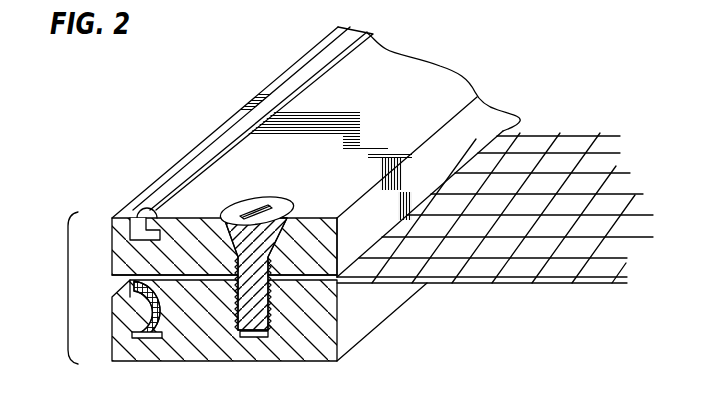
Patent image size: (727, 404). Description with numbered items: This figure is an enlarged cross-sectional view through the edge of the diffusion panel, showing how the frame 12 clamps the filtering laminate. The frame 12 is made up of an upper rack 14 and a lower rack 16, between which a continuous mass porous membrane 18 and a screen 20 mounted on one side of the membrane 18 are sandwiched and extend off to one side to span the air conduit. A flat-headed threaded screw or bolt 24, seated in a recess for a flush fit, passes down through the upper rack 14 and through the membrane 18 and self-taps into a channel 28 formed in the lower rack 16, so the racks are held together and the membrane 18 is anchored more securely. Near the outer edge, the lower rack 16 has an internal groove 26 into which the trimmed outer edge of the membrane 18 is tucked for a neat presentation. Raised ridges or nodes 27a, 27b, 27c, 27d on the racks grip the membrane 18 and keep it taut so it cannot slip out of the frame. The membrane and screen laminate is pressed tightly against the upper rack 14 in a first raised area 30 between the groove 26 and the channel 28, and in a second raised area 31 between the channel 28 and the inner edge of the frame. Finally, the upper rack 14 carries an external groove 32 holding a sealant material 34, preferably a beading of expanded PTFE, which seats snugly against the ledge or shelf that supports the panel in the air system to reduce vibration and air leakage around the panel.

The frame 12 is at (68, 292).
The upper rack 14 is at (112, 232).
The lower rack 16 is at (123, 350).
The continuous mass porous membrane 18 is at (509, 267).
The screen 20 is at (463, 267).
The threaded screw or bolt 24 is at (261, 264).
The internal groove 26 is at (151, 352).
The raised ridge or node 27a is at (184, 285).
The raised ridge or node 27b is at (197, 268).
The raised ridge or node 27c is at (299, 268).
The raised ridge or node 27d is at (304, 285).
The channel 28 is at (255, 340).
The first raised area 30 is at (214, 332).
The second raised area 31 is at (340, 357).
The external groove 32 is at (153, 241).
The sealant material 34 is at (172, 188).